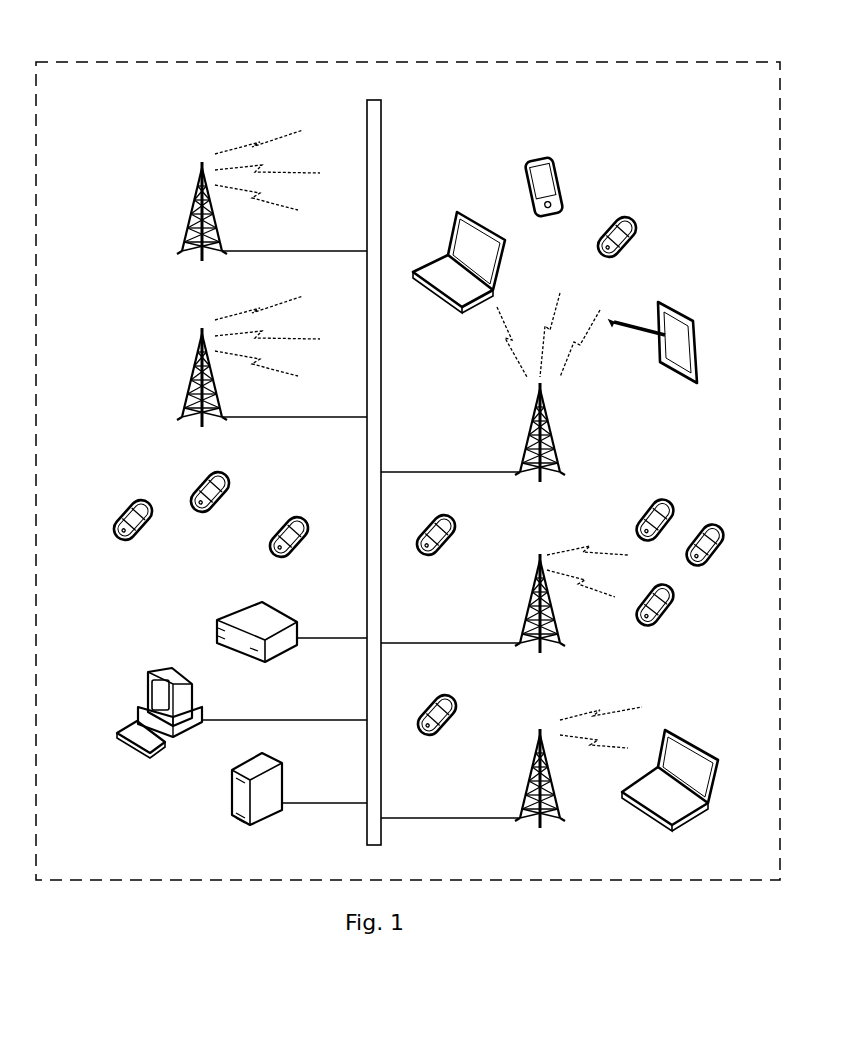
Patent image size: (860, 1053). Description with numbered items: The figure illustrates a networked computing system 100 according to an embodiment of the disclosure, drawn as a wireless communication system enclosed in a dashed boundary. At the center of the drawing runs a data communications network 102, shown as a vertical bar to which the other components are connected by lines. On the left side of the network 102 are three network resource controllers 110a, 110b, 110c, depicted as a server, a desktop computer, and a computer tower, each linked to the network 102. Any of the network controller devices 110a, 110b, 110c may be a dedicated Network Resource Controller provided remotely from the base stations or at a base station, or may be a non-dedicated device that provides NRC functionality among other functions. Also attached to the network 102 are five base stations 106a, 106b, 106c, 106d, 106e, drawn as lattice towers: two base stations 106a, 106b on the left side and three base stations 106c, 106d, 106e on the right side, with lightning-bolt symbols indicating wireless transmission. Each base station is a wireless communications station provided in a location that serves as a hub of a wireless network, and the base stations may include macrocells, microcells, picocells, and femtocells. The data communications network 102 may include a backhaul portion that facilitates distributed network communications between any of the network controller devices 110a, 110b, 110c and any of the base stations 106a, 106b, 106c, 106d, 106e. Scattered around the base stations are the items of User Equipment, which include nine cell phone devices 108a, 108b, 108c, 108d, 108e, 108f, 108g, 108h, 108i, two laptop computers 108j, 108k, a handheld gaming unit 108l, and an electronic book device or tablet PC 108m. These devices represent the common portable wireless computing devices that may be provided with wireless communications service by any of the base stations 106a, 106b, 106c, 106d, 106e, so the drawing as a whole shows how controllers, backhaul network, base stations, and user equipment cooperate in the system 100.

The networked computing system 100 is at (284, 37).
The data communications network 102 is at (365, 114).
The base station 106a is at (190, 212).
The base station 106b is at (192, 379).
The base station 106c is at (530, 769).
The base station 106d is at (527, 605).
The base station 106e is at (555, 446).
The cell phone device 108a is at (116, 518).
The cell phone device 108b is at (205, 481).
The cell phone device 108c is at (270, 556).
The cell phone device 108d is at (458, 696).
The cell phone device 108e is at (673, 620).
The cell phone device 108f is at (717, 555).
The cell phone device 108g is at (677, 498).
The cell phone device 108h is at (458, 518).
The cell phone device 108i is at (645, 222).
The laptop computer 108j is at (693, 738).
The laptop computer 108k is at (458, 213).
The handheld gaming unit 108l is at (563, 177).
The electronic book device or tablet PC 108m is at (693, 313).
The network resource controller 110a is at (213, 636).
The network resource controller 110b is at (143, 673).
The network resource controller 110c is at (232, 808).